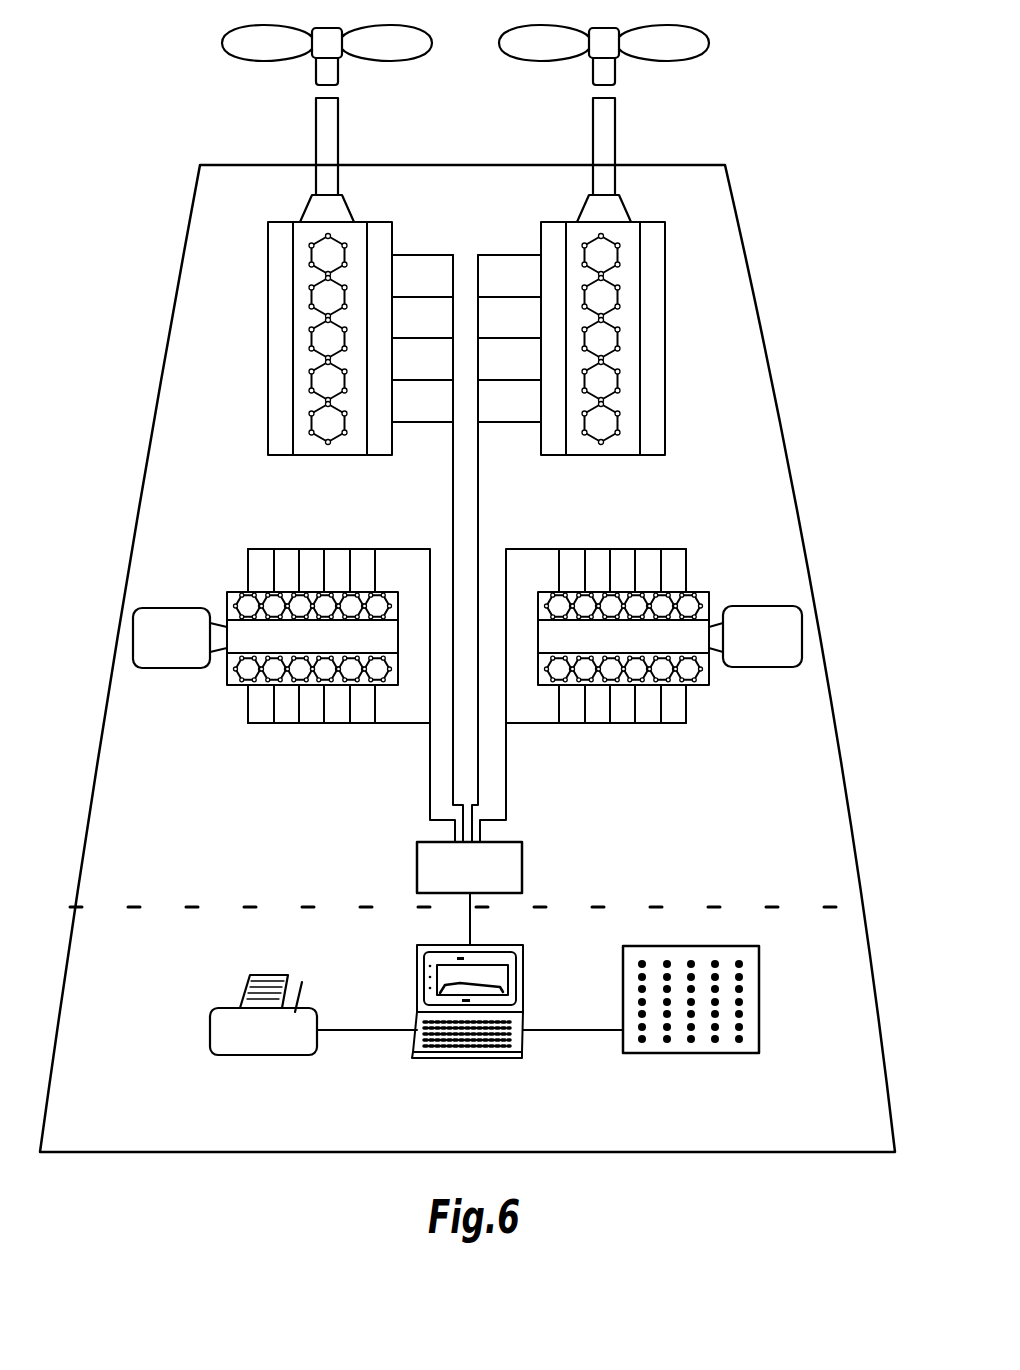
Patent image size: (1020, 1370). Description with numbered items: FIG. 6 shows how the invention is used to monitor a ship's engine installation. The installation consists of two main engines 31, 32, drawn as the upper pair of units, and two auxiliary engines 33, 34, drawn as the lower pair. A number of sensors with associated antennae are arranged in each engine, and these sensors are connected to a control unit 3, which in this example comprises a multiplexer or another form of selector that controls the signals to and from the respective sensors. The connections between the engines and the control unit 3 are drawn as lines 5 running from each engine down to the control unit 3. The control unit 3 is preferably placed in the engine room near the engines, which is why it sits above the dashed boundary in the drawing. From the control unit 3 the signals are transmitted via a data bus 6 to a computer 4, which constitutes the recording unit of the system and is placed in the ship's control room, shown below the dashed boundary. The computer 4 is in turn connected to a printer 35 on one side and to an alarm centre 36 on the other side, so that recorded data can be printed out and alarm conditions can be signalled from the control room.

The main engine 31 is at (376, 232).
The main engine 32 is at (646, 232).
The auxiliary engine 33 is at (225, 594).
The auxiliary engine 34 is at (712, 592).
The pipes / lines 5 is at (453, 507).
The control unit 3 is at (522, 858).
The data bus 6 is at (470, 932).
The computer 4 is at (505, 1058).
The printer 35 is at (218, 1008).
The alarm centre 36 is at (759, 965).